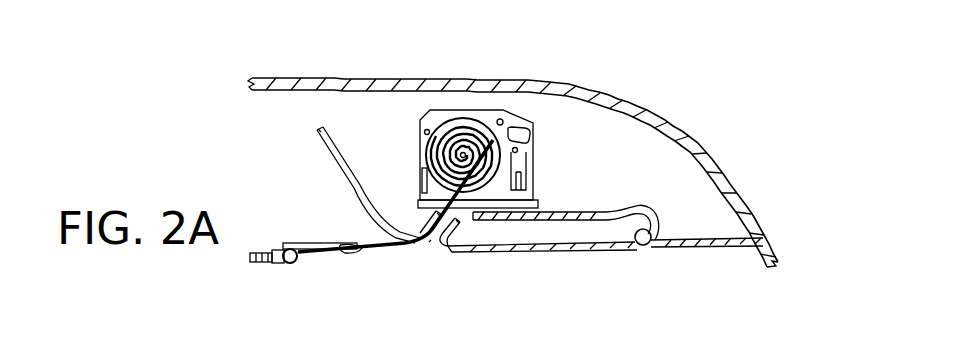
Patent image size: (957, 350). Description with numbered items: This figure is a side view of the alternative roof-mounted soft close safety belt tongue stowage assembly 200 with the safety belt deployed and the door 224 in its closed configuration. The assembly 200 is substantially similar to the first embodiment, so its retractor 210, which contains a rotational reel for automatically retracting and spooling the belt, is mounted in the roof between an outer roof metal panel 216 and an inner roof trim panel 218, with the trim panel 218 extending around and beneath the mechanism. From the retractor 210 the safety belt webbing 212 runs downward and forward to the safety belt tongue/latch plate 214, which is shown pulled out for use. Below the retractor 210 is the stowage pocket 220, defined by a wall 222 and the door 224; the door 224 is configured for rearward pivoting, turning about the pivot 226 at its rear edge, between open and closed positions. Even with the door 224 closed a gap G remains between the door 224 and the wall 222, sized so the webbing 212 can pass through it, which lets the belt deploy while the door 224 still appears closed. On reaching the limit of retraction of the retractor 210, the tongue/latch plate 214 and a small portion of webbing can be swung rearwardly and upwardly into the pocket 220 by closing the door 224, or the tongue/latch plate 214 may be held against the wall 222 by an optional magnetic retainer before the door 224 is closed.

The roof-mounted soft close safety belt tongue stowage assembly 200 is at (683, 67).
The retractor 210 is at (485, 110).
The hose 212 is at (384, 250).
The safety belt tongue/latch plate 214 is at (330, 242).
The vehicle body panel 216 is at (345, 78).
The hose 218 is at (328, 152).
The pocket 220 is at (562, 263).
The wall 222 is at (582, 211).
The door 224 is at (470, 249).
The fitting 226 is at (646, 246).
The gap G is at (427, 248).